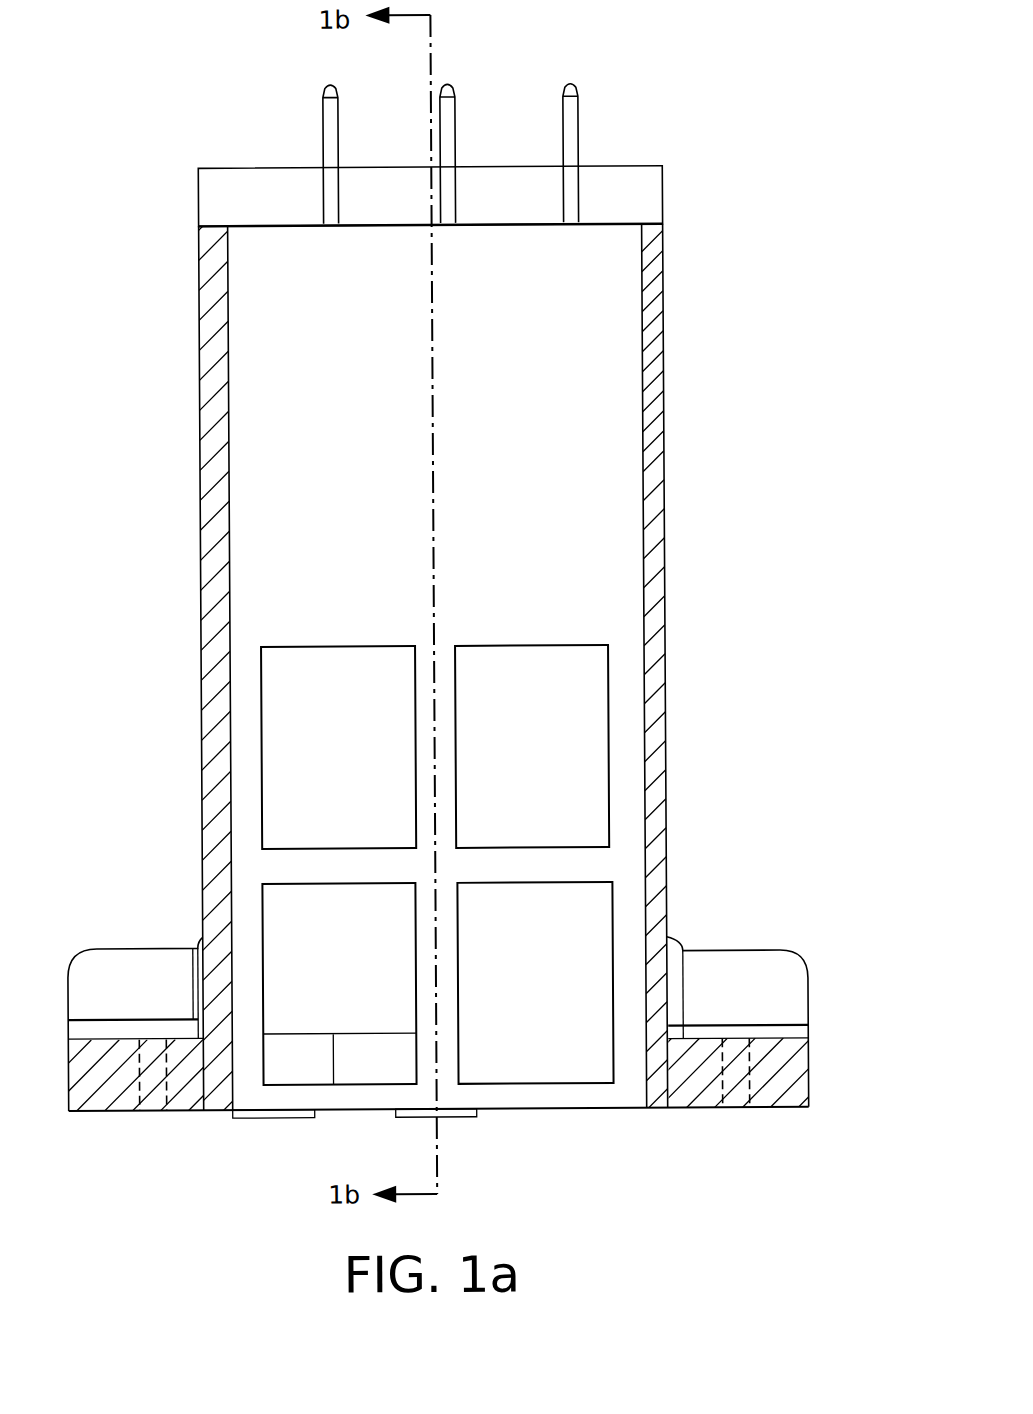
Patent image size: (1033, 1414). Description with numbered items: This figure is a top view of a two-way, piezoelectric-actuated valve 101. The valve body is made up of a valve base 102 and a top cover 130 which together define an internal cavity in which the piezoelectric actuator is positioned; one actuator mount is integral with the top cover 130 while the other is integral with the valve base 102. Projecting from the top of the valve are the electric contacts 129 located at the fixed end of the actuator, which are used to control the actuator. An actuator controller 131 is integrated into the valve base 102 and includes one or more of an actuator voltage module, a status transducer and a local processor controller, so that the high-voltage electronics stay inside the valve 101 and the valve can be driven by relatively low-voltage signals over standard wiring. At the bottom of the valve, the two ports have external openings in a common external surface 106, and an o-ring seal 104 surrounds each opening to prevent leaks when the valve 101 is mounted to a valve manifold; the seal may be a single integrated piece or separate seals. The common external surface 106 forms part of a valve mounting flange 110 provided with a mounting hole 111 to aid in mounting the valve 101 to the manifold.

The valve 101 is at (180, 336).
The valve base 102 is at (654, 425).
The o-ring seal 104 is at (240, 1117).
The common external surface 106 is at (557, 1110).
The valve mounting flange 110 is at (795, 1082).
The mounting hole 111 is at (730, 1087).
The electric contacts 129 is at (581, 140).
The top cover 130 is at (623, 305).
The actuator controller 131 is at (666, 200).